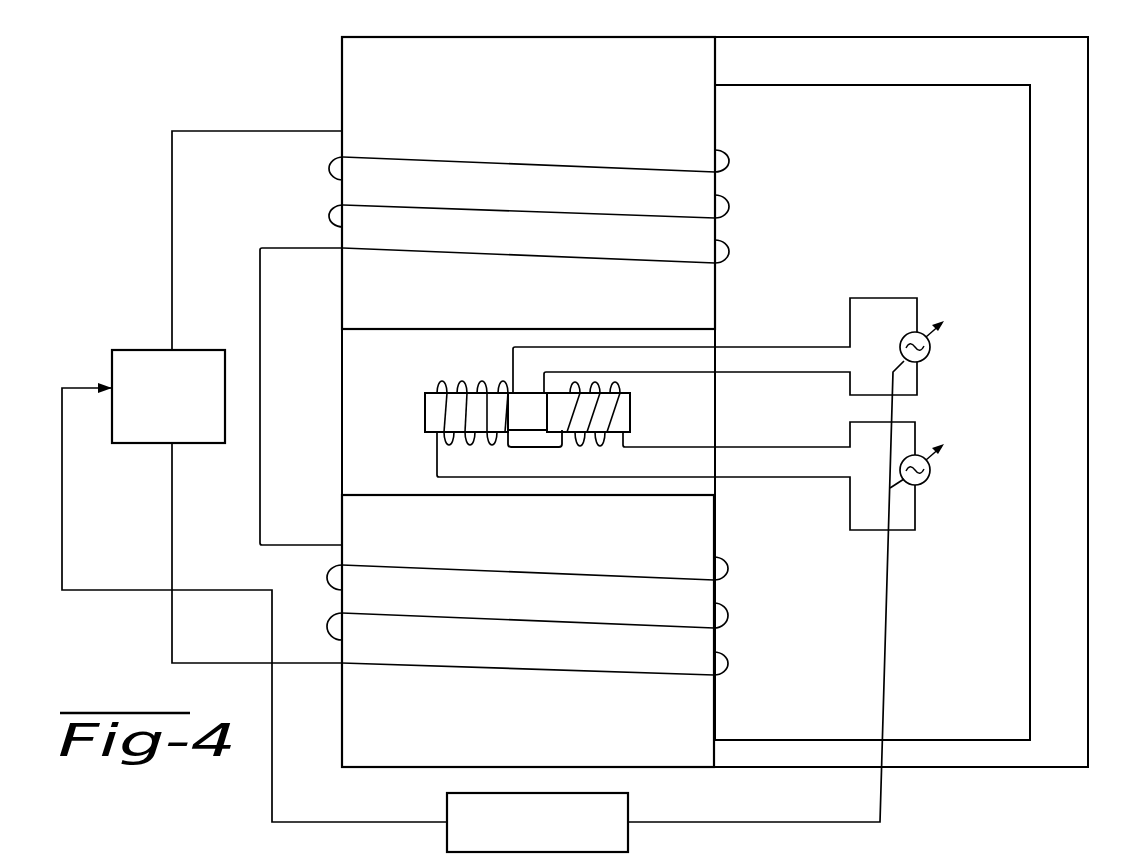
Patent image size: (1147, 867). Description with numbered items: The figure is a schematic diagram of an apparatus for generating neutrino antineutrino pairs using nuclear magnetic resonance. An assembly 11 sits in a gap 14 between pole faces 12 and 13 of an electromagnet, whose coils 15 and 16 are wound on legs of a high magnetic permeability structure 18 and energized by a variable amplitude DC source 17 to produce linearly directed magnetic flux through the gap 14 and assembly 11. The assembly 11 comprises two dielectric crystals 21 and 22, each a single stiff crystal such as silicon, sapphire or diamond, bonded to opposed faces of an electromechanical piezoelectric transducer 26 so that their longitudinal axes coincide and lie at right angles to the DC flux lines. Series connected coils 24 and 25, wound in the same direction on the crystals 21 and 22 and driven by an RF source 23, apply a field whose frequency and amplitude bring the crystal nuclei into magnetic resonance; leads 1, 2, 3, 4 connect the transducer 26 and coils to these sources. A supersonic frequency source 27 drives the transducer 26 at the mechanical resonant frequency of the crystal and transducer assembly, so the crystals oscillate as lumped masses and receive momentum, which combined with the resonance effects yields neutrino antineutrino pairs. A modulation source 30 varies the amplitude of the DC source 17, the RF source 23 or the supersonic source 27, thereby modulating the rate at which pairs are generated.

The lead wire 1 is at (676, 481).
The lead wire 2 is at (769, 438).
The lead wire 3 is at (730, 380).
The lead wire 4 is at (715, 345).
The assembly 11 is at (510, 395).
The pole face 12 is at (356, 330).
The pole face 13 is at (370, 495).
The gap 14 is at (301, 396).
The coil 15 is at (735, 160).
The coil 16 is at (742, 605).
The variable amplitude DC source 17 is at (130, 352).
The high magnetic permeability structure 18 is at (743, 402).
The dielectric crystal 21 is at (431, 393).
The dielectric crystal 22 is at (628, 415).
The RF source 23 is at (927, 470).
The coil 24 is at (462, 391).
The coil 25 is at (621, 385).
The electromechanical piezoelectric transducer 26 is at (534, 393).
The source 27 is at (929, 352).
The modulation source 30 is at (622, 837).